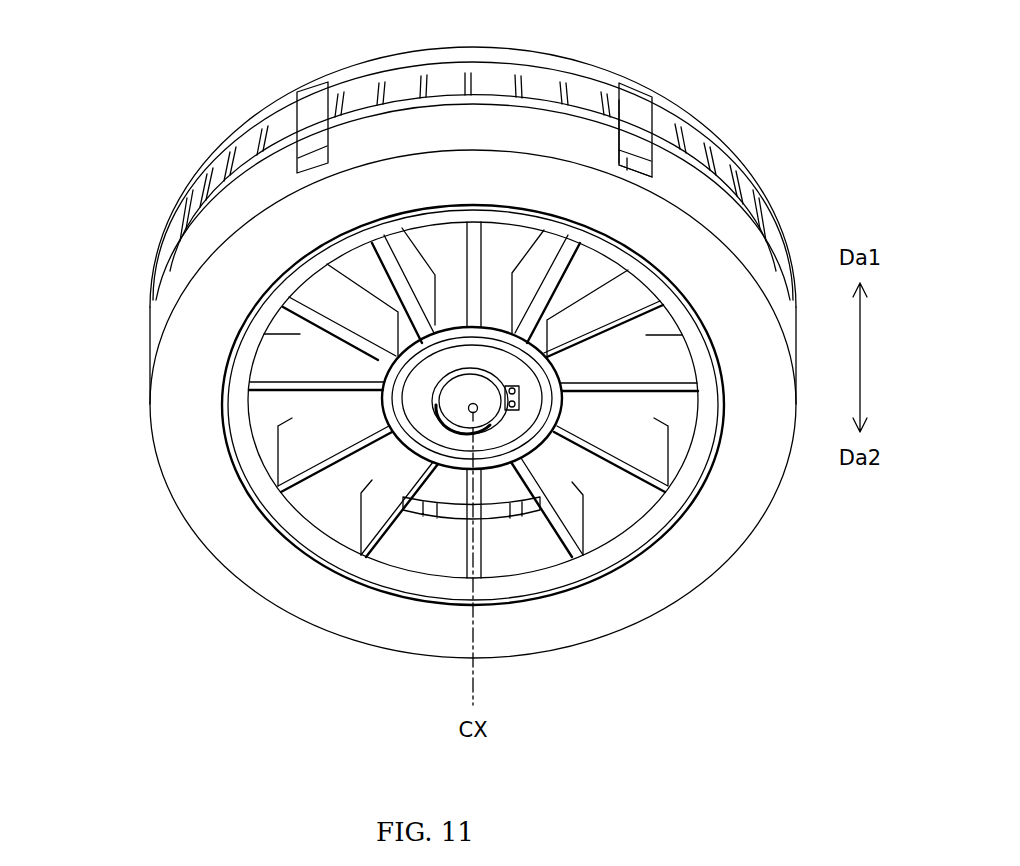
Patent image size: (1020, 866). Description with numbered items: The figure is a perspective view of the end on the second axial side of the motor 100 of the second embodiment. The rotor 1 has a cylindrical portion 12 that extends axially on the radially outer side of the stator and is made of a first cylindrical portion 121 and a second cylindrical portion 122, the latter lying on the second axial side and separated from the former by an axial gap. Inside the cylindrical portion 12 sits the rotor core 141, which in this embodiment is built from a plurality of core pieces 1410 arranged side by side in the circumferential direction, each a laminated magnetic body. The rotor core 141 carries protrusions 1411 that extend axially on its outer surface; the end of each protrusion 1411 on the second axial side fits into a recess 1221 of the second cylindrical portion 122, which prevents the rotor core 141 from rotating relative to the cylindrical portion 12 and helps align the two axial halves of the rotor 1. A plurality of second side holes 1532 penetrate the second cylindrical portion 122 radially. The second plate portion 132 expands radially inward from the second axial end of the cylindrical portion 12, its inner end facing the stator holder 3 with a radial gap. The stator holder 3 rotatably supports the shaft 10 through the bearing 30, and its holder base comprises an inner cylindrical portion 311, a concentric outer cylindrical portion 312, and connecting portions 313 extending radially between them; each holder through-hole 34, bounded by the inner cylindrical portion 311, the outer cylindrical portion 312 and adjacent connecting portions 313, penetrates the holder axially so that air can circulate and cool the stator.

The motor 100 is at (419, 362).
The rotor 1 is at (473, 429).
The cylindrical portion 12 is at (419, 225).
The first cylindrical portion 121 is at (200, 187).
The second cylindrical portion 122 is at (80, 185).
The recess 1221 is at (612, 131).
The rotor core 141 is at (457, 157).
The core piece 1410 is at (240, 160).
The protrusion 1411 is at (625, 113).
The second side hole 1532 is at (647, 157).
The stator holder 3 is at (437, 457).
The inner cylindrical portion 311 is at (557, 413).
The outer cylindrical portion 312 is at (653, 520).
The connecting portion 313 is at (592, 515).
The holder through-hole 34 is at (520, 545).
The bearing 30 is at (420, 384).
The shaft 10 is at (466, 409).
The second plate portion 132 is at (402, 627).